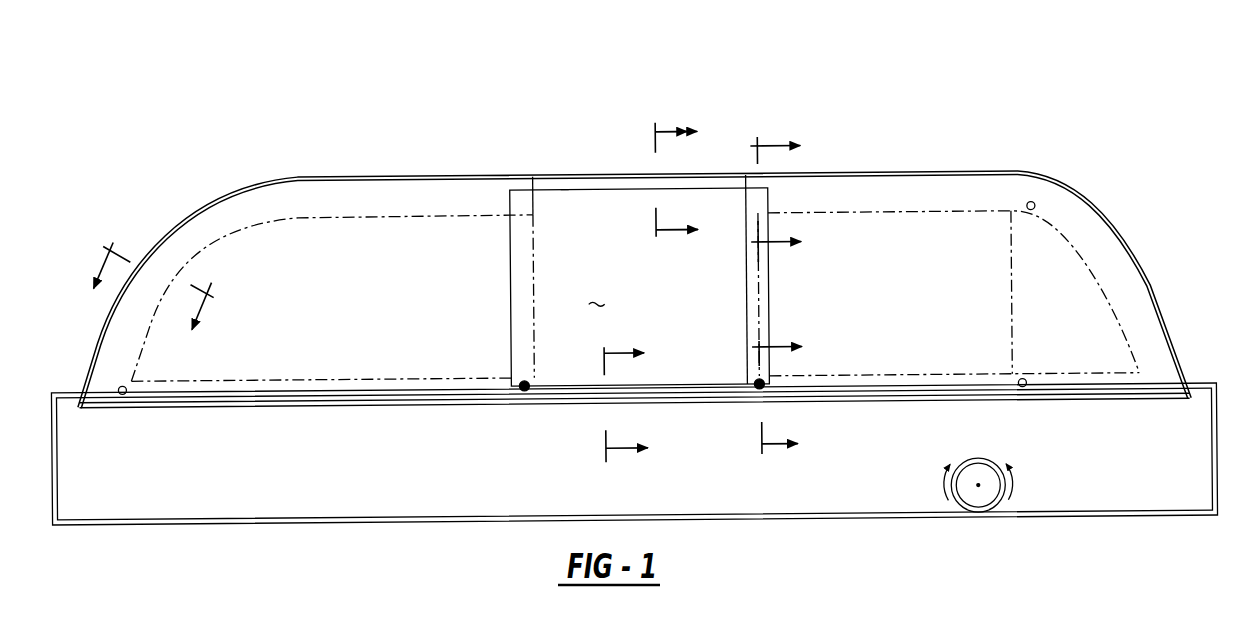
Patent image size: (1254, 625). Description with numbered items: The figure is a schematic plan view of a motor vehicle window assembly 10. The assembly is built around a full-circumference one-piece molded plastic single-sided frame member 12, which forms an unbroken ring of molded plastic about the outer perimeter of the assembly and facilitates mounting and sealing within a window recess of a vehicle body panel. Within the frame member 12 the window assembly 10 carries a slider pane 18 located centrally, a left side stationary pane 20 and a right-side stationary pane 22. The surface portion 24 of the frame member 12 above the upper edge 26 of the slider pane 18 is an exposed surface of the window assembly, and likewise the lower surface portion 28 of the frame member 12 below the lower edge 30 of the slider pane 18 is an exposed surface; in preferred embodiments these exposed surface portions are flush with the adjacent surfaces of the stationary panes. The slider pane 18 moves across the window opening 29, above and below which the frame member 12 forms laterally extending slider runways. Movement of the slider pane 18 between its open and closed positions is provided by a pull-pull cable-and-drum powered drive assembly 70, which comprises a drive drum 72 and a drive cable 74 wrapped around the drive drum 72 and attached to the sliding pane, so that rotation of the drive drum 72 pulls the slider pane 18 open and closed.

The window assembly 10 is at (1000, 101).
The frame member 12 is at (1002, 200).
The slider pane 18 is at (742, 285).
The left side stationary pane 20 is at (312, 339).
The right-side stationary pane 22 is at (1070, 304).
The surface portion 24 is at (613, 182).
The upper edge 26 is at (567, 186).
The lower surface portion 28 is at (709, 389).
The window opening 29 is at (597, 292).
The lower edge 30 is at (565, 387).
The pull-pull cable-and-drum powered drive assembly 70 is at (986, 509).
The drive drum 72 is at (988, 473).
The drive cable 74 is at (1120, 521).